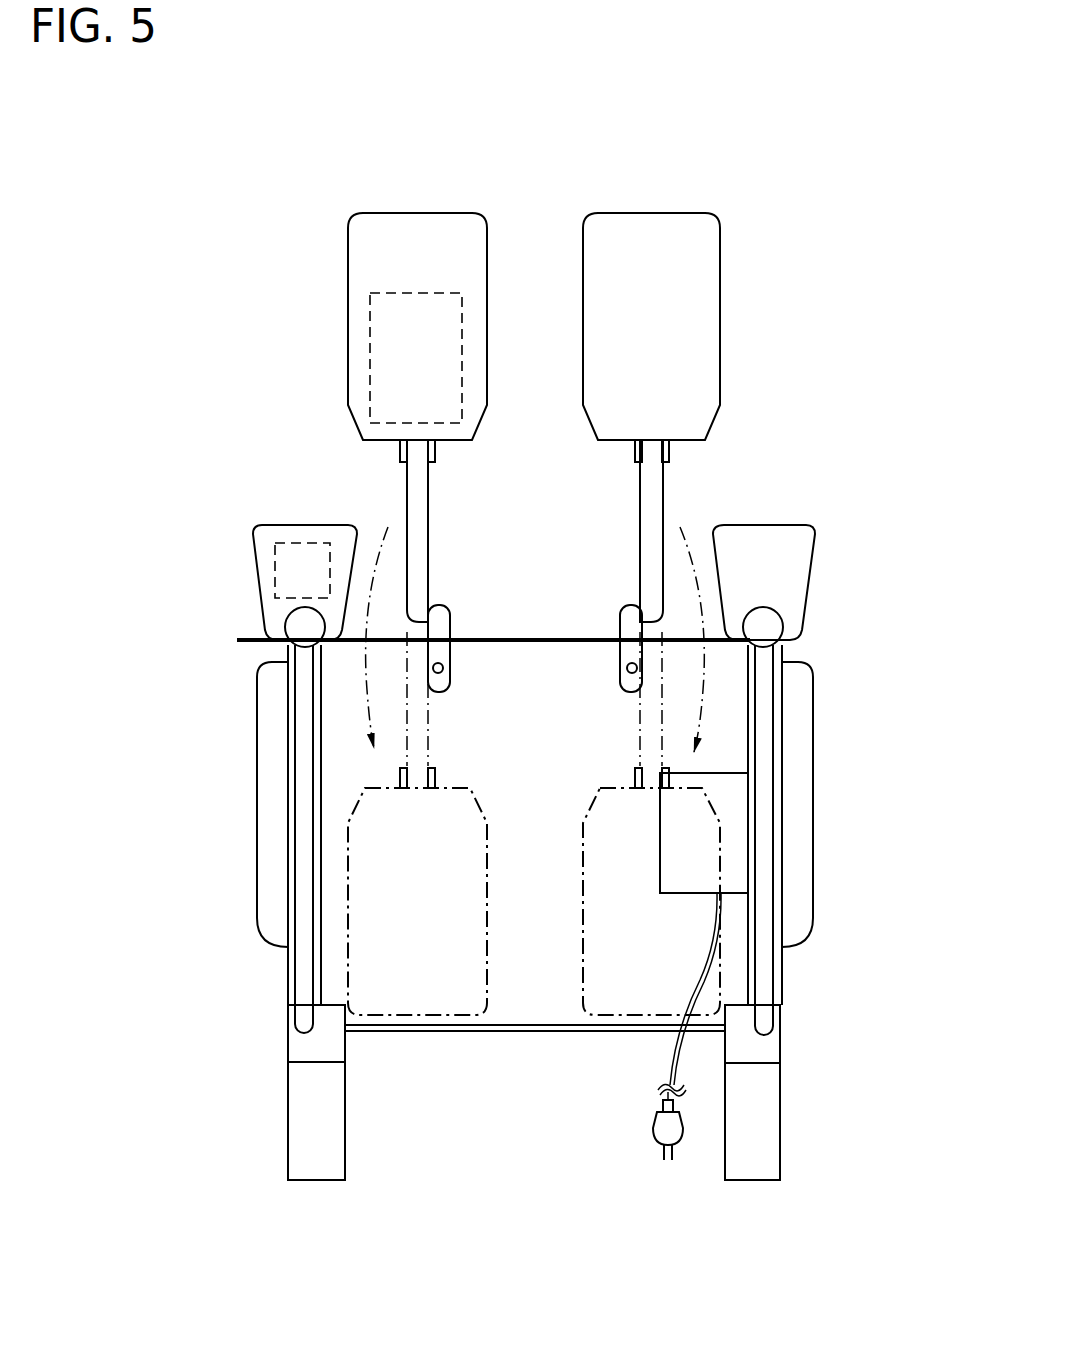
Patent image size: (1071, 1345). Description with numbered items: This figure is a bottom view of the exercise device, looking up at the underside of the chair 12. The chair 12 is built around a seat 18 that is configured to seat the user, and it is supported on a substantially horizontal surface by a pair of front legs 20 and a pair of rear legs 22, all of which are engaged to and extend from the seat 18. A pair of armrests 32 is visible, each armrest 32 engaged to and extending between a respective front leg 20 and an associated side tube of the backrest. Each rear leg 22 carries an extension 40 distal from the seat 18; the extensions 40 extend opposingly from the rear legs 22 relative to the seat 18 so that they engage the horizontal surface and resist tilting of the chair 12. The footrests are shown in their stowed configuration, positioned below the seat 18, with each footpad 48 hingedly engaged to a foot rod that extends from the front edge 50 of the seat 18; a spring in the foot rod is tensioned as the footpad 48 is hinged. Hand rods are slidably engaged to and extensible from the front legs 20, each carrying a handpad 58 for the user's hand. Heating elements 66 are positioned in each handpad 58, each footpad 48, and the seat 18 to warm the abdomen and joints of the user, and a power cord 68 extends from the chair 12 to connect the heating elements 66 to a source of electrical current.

The chair 12 is at (766, 952).
The seat 18 is at (562, 744).
The front legs 20 is at (746, 631).
The rear legs 22 is at (325, 1043).
The armrests 32 is at (793, 834).
The extensions 40 is at (316, 1098).
The footpad 48 is at (453, 290).
The front edge 50 is at (537, 638).
The handpad 58 is at (316, 578).
The heating elements 66 is at (400, 374).
The power cord 68 is at (682, 1045).